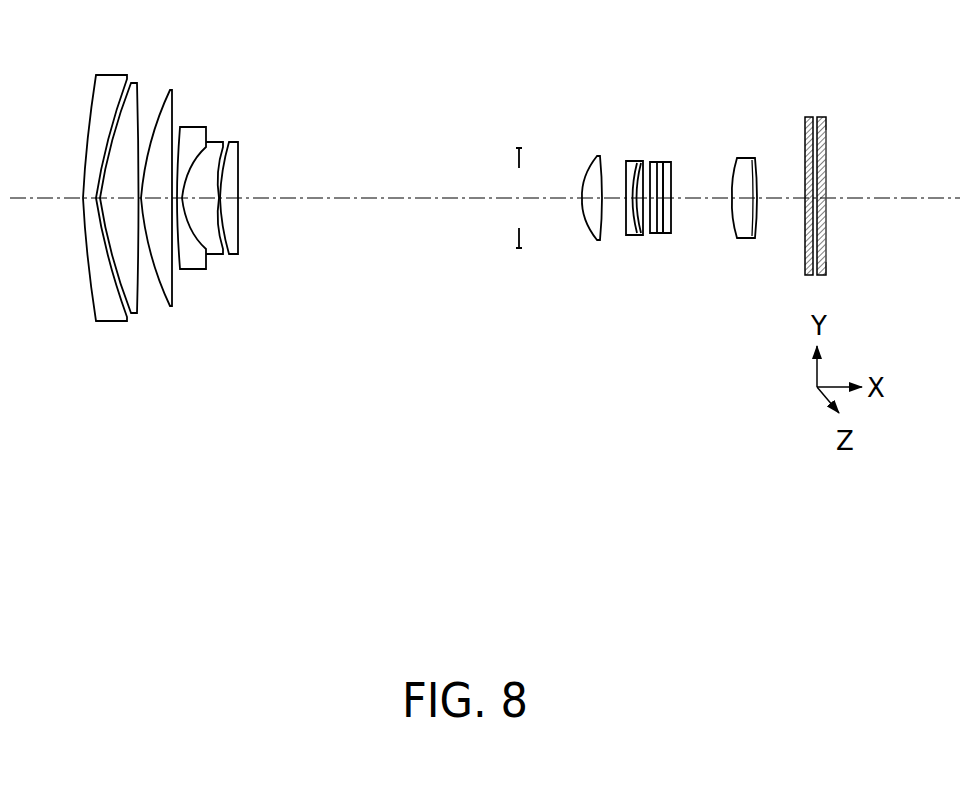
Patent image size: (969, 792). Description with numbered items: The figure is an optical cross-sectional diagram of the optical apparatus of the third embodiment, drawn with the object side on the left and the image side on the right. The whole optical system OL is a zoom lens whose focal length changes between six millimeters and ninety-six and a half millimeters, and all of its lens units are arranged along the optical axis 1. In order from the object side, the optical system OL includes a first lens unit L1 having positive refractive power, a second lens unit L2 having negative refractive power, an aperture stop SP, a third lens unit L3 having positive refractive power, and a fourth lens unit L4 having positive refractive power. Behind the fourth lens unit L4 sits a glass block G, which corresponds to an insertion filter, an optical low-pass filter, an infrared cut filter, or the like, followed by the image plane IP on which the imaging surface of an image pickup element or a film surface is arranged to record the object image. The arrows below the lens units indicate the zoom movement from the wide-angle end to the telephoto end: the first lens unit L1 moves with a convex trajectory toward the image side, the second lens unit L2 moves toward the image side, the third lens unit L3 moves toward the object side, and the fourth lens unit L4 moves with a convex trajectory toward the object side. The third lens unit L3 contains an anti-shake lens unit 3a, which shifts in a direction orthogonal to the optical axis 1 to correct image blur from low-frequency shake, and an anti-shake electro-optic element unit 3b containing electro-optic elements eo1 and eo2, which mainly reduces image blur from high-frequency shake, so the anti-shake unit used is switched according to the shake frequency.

The optical axis 1 is at (63, 197).
The optical system OL is at (85, 57).
The first lens unit L1 is at (125, 625).
The second lens unit L2 is at (443, 628).
The third lens unit L3 is at (635, 360).
The fourth lens unit L4 is at (787, 635).
The aperture stop SP is at (490, 630).
The anti-shake lens unit 3a is at (642, 258).
The anti-shake electro-optic element unit 3b is at (642, 194).
The electro-optic element eo1 is at (650, 161).
The electro-optic element eo2 is at (666, 161).
The glass block G is at (827, 112).
The image plane IP is at (826, 182).